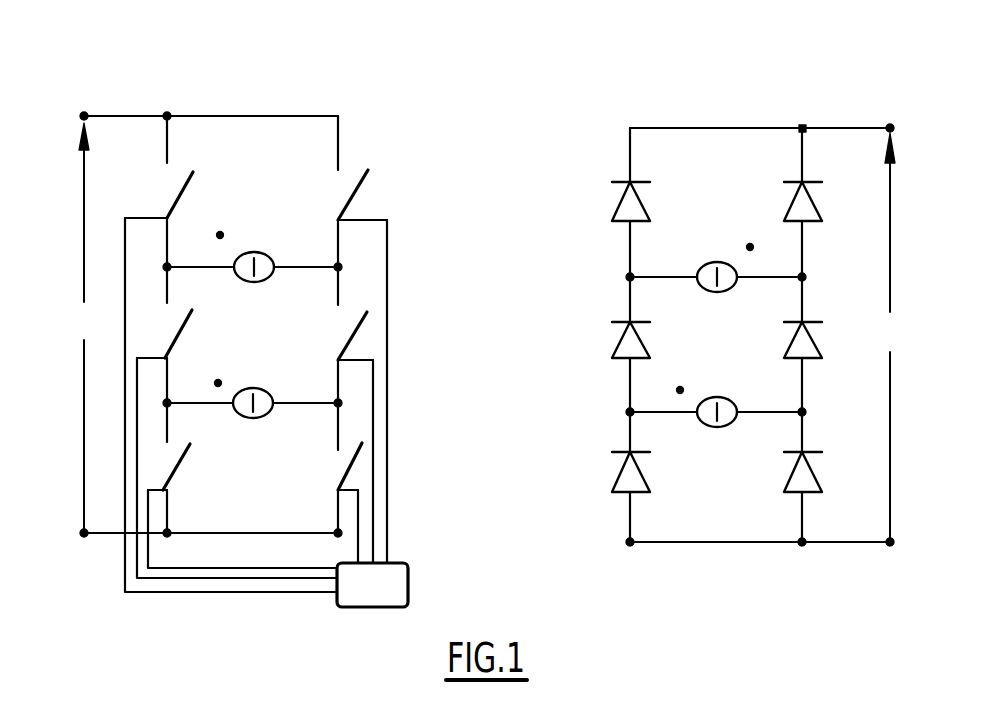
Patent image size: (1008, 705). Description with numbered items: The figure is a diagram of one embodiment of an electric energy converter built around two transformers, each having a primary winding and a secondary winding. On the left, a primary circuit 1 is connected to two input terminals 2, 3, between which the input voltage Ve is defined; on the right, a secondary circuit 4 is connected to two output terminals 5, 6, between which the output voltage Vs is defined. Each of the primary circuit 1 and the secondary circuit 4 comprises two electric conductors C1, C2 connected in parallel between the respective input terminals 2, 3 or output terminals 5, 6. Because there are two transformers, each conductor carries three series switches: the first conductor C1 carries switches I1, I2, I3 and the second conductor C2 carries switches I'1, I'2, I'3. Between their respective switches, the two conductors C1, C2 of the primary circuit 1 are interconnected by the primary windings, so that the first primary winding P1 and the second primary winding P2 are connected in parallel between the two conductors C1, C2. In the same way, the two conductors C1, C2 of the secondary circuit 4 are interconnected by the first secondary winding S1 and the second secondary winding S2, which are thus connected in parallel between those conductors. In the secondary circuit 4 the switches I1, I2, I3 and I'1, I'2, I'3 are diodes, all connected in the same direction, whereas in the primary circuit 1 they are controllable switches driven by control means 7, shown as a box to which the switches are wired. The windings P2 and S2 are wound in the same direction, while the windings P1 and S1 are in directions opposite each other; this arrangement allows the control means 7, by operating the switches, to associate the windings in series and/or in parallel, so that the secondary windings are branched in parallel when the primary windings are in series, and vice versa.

The primary circuit 1 is at (200, 90).
The input terminal 2 is at (85, 114).
The input terminal 3 is at (85, 536).
The secondary circuit 4 is at (778, 112).
The output terminal 5 is at (890, 127).
The output terminal 6 is at (890, 545).
The control means 7 is at (266, 412).
The first electric conductor C1 is at (630, 155).
The second electric conductor C2 is at (341, 140).
The first switch of first conductor I1 is at (193, 175).
The second switch of first conductor I2 is at (612, 342).
The third switch of first conductor I3 is at (612, 472).
The first switch of second conductor I'1 is at (601, 186).
The second switch of second conductor I'2 is at (595, 322).
The third switch of second conductor I'3 is at (600, 461).
The first primary winding P1 is at (254, 251).
The second primary winding P2 is at (254, 387).
The first secondary winding S1 is at (718, 262).
The second secondary winding S2 is at (716, 397).
The input voltage Ve is at (85, 328).
The output voltage Vs is at (890, 337).